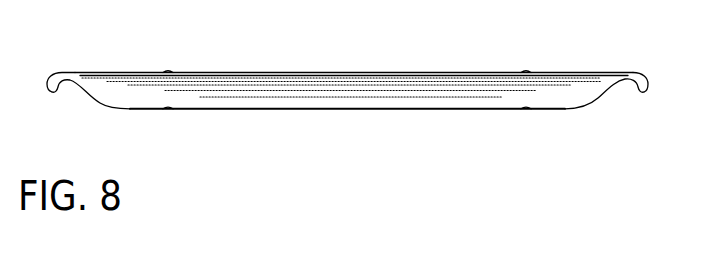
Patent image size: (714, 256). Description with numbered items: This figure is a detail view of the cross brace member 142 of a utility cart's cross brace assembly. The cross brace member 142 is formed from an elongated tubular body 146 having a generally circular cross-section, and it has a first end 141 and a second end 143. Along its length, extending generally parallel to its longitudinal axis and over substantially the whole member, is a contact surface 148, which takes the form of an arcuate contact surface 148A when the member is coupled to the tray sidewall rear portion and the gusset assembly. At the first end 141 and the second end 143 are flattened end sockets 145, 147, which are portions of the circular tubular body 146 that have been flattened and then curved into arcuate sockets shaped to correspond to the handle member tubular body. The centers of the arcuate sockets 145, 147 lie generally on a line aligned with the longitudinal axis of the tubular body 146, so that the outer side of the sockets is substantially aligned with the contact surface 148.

The first end 141 is at (590, 73).
The cross brace member 142 is at (335, 73).
The second end 143 is at (103, 73).
The flattened end socket 145 is at (623, 81).
The tubular body 146 is at (352, 110).
The flattened end socket 147 is at (73, 83).
The contact surface 148 is at (415, 73).
The arcuate contact surface 148A is at (222, 87).